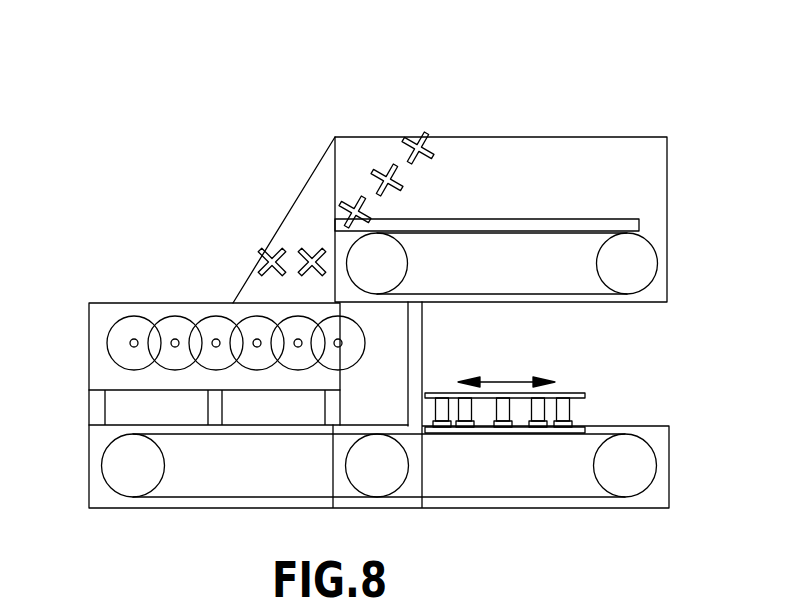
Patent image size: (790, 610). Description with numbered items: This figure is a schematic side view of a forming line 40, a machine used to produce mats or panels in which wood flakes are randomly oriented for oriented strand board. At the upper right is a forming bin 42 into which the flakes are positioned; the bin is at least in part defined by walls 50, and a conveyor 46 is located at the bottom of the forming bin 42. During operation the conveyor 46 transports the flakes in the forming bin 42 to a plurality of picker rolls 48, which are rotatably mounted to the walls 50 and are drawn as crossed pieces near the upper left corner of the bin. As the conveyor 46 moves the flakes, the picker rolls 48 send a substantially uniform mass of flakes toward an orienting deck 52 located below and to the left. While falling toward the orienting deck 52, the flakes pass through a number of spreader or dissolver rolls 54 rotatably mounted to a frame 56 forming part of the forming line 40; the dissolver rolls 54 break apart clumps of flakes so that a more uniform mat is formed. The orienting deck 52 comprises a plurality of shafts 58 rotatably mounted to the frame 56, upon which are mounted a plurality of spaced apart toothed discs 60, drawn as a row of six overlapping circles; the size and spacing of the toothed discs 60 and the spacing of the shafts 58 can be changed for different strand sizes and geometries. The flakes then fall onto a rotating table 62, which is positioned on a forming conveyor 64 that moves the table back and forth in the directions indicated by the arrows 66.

The forming line 40 is at (290, 78).
The forming bin 42 is at (535, 198).
The conveyor 46 is at (660, 240).
The picker rolls 48 is at (410, 137).
The walls 50 is at (472, 168).
The orienting deck 52 is at (180, 300).
The dissolver rolls 54 is at (315, 253).
The frame 56 is at (307, 228).
The shafts 58 is at (172, 347).
The toothed discs 60 is at (125, 340).
The rotating table 62 is at (575, 394).
The forming conveyor 64 is at (182, 433).
The arrows 66 is at (500, 380).